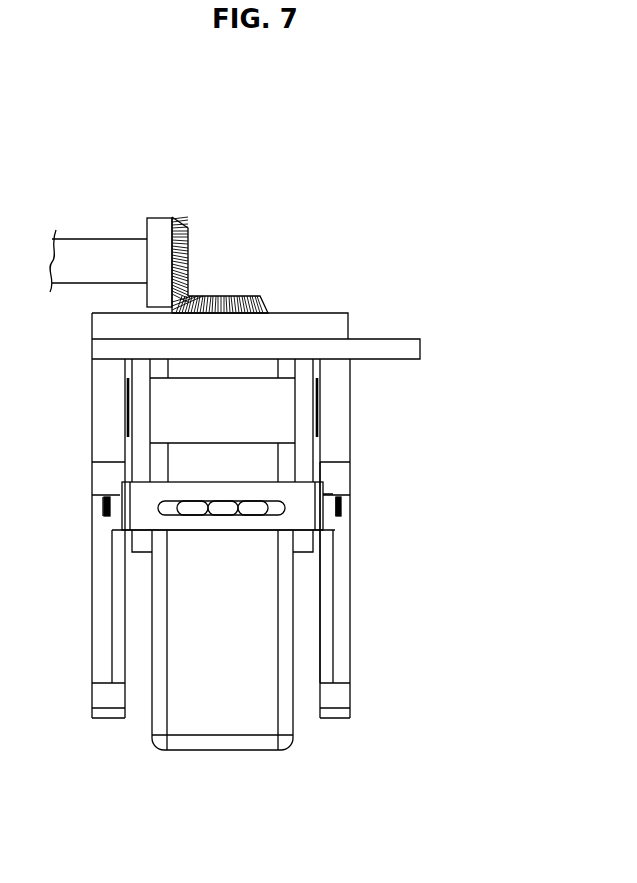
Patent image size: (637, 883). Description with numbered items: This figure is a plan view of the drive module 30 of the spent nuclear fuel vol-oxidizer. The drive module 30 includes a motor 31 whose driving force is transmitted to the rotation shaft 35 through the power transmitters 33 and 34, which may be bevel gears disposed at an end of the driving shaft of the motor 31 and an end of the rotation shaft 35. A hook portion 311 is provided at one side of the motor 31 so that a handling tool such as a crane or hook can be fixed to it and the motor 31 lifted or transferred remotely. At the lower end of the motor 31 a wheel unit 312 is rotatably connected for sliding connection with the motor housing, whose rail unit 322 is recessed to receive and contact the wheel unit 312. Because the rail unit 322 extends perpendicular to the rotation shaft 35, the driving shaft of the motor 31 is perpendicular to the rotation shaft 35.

The drive module 30 is at (352, 275).
The motor 31 is at (253, 593).
The hook portion 311 is at (188, 505).
The wheel unit 312 is at (323, 513).
The rail unit 322 is at (328, 641).
The power transmitter 33 is at (227, 297).
The power transmitter 34 is at (180, 220).
The rotation shaft 35 is at (100, 243).